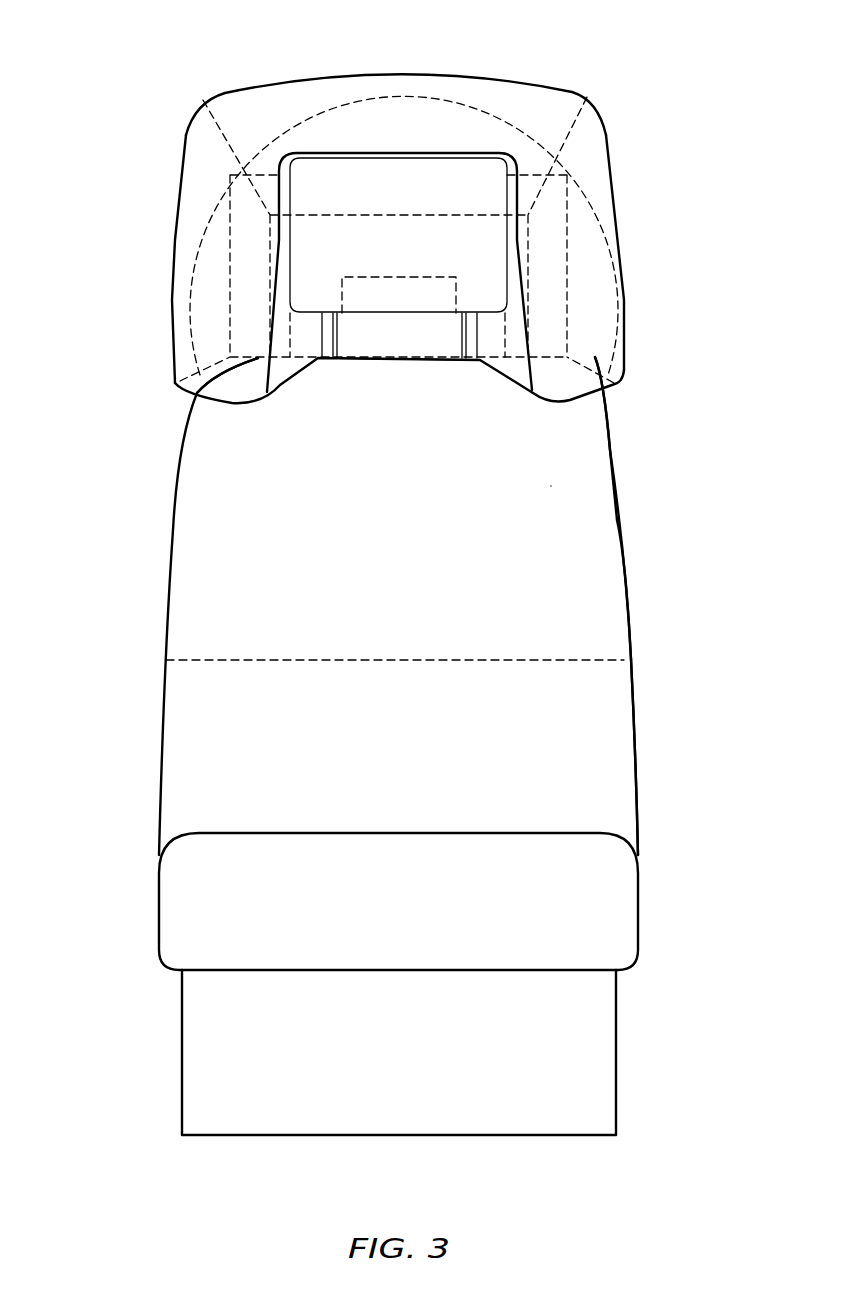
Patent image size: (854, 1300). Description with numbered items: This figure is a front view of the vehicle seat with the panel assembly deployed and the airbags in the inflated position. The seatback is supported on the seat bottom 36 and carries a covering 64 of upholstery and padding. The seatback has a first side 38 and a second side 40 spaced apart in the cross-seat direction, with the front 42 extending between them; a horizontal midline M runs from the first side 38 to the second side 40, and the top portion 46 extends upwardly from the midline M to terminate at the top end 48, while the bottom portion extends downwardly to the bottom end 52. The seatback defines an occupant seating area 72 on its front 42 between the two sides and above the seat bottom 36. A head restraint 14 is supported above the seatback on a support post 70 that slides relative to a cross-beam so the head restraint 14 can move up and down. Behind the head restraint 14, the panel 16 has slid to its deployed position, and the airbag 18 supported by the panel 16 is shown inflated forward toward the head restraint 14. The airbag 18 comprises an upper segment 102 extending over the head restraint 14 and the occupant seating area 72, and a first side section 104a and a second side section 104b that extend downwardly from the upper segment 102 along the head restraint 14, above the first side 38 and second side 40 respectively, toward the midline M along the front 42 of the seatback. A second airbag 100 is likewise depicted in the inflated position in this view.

The head restraint 14 is at (389, 314).
The panel 16 is at (630, 243).
The airbag 18 is at (626, 138).
The seat bottom 36 is at (640, 903).
The first side 38 is at (618, 458).
The second side 40 is at (173, 528).
The front 42 is at (551, 486).
The top portion 46 is at (605, 539).
The top end 48 is at (427, 357).
The bottom end 52 is at (605, 746).
The covering 64 is at (570, 443).
The support post 70 is at (337, 337).
The occupant seating area 72 is at (447, 712).
The airbag 100 is at (513, 128).
The upper segment 102 is at (290, 72).
The first side section 104a is at (617, 182).
The second side section 104b is at (177, 202).
The midline M is at (275, 658).